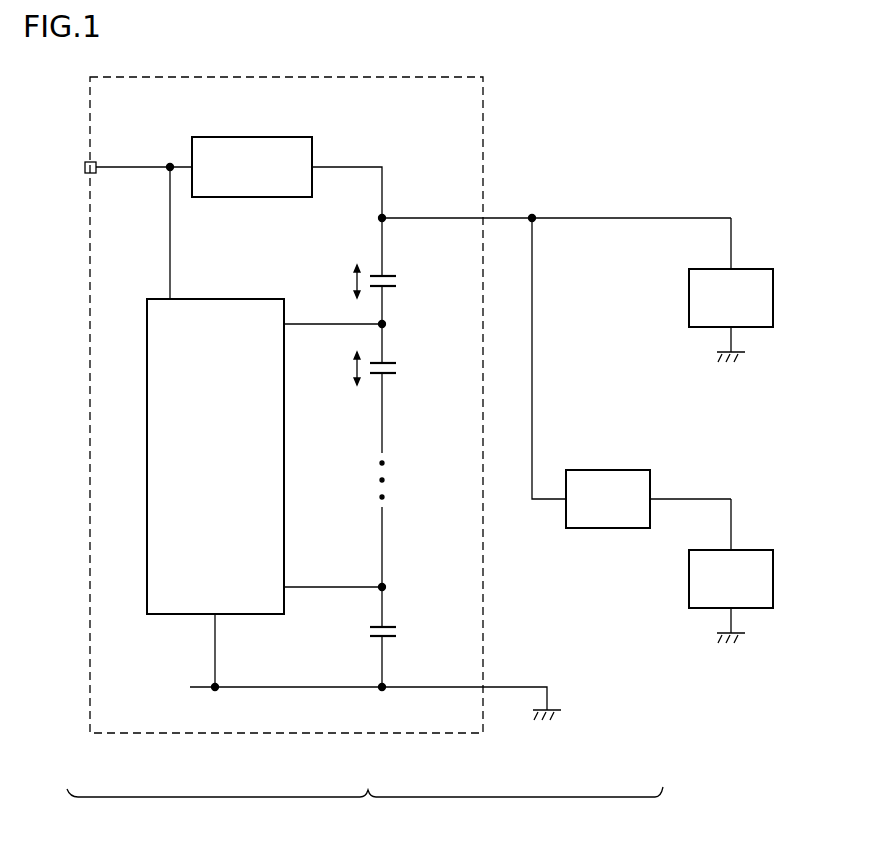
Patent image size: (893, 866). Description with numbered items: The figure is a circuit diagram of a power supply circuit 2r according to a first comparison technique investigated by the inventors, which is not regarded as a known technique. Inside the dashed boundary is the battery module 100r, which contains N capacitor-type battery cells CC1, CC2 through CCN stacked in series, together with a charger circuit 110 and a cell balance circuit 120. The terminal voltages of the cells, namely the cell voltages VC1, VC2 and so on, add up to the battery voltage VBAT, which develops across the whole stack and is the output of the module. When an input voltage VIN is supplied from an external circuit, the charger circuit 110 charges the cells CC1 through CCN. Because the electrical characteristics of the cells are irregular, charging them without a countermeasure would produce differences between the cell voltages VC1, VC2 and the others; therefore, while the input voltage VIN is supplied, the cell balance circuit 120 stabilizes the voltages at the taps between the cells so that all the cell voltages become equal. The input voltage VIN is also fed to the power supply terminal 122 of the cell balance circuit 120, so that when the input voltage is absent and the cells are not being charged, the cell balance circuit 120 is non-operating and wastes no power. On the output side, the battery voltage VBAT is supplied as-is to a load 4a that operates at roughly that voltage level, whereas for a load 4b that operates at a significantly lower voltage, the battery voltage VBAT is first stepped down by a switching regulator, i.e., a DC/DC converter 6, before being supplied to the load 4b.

The battery module 100r is at (288, 733).
The power supply circuit 2r is at (365, 809).
The charger circuit 110 is at (277, 137).
The cell balance circuit 120 is at (170, 615).
The power supply terminal 122 is at (172, 299).
The battery cell CC1 is at (403, 282).
The battery cell CC2 is at (403, 369).
The battery cell CCN is at (403, 632).
The cell voltage VC1 is at (351, 282).
The cell voltage VC2 is at (351, 369).
The input voltage VIN is at (118, 166).
The battery voltage VBAT is at (556, 206).
The load 4a is at (776, 299).
The load 4b is at (776, 574).
The switching regulator (DC/DC converter) 6 is at (600, 528).